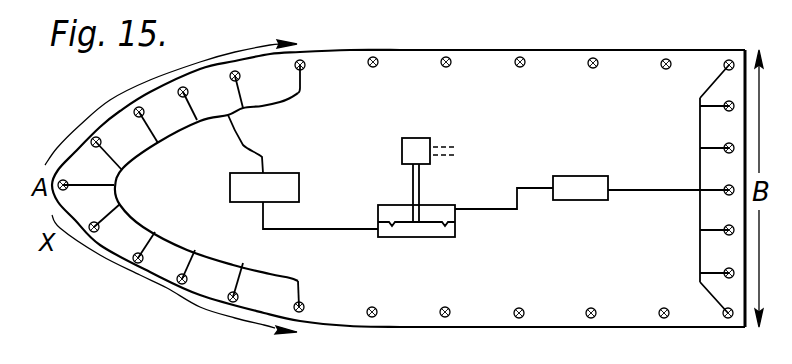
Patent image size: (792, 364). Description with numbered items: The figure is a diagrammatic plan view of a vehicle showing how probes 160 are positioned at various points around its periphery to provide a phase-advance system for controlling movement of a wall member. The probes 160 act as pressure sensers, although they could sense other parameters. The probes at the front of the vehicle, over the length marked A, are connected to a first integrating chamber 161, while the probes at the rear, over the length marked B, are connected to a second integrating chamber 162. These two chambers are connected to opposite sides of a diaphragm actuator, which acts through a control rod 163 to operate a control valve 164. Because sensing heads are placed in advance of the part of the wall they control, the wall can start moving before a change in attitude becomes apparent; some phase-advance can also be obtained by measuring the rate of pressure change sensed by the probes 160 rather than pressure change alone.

The probes 160 is at (134, 112).
The first integrating chamber 161 is at (288, 185).
The second integrating chamber 162 is at (393, 204).
The control rod 163 is at (422, 183).
The control valve 164 is at (423, 145).